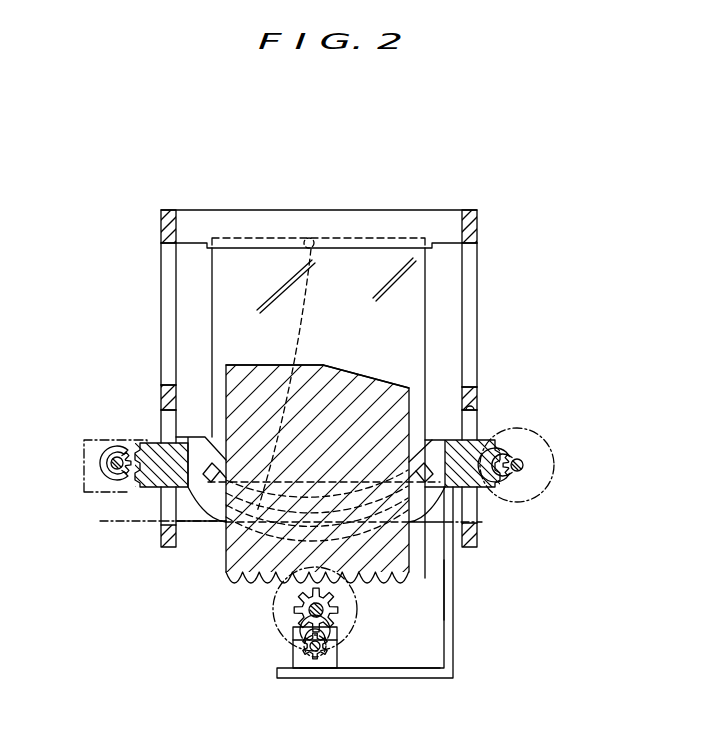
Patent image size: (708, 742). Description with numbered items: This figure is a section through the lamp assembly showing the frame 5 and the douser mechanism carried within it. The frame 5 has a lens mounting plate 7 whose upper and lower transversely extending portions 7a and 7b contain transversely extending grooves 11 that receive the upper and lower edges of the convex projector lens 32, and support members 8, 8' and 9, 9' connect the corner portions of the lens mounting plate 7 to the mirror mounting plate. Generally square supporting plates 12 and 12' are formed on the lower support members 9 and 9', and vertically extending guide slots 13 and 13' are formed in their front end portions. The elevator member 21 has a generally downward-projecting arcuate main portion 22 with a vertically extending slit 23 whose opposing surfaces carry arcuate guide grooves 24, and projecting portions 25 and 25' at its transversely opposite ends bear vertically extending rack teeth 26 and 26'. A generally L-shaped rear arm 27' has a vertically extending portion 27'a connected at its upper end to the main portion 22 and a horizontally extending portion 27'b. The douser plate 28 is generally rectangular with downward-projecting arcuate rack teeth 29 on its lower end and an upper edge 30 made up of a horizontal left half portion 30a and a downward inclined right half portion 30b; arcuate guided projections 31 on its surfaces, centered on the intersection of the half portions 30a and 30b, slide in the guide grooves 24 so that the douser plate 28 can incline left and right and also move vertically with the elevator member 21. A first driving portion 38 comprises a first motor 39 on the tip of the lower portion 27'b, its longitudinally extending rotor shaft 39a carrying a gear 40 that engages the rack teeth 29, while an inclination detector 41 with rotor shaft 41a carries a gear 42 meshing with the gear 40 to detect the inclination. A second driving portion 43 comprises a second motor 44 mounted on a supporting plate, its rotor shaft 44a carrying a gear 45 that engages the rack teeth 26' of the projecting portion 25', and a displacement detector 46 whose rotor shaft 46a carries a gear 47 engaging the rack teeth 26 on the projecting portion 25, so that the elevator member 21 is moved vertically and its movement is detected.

The frame 5 is at (480, 225).
The lens mounting plate 7 is at (478, 265).
The upper transversely extending portion 7a is at (372, 210).
The lower transversely extending portion 7b is at (190, 515).
The support member 8 is at (144, 215).
The support member 8' is at (476, 205).
The lower support member 9 is at (148, 545).
The lower support member 9' is at (502, 527).
The groove 11 is at (304, 238).
The supporting plate 12 is at (146, 361).
The supporting plate 12' is at (501, 364).
The guide slot 13 is at (146, 380).
The guide slot 13' is at (494, 385).
The elevator member 21 is at (213, 515).
The main portion 22 is at (200, 445).
The slit 23 is at (262, 366).
The arcuate guide groove 24 is at (423, 427).
The projecting portion 25 is at (157, 496).
The projecting portion 25' is at (468, 446).
The rack teeth 26 is at (112, 425).
The rack teeth 26' is at (547, 405).
The rear arm 27' is at (416, 582).
The vertically extending portion 27'a is at (504, 590).
The horizontally extending portion 27'b is at (379, 699).
The douser plate 28 is at (368, 378).
The rack teeth 29 is at (275, 588).
The upper edge 30 is at (215, 365).
The left half portion 30a is at (260, 363).
The right half portion 30b is at (357, 388).
The guided projection 31 is at (297, 380).
The projector lens 32 is at (415, 290).
The first driving portion 38 is at (268, 652).
The first motor 39 is at (350, 640).
The rotor shaft 39a is at (328, 618).
The gear 40 is at (277, 632).
The inclination detector 41 is at (342, 663).
The rotor shaft 41a is at (307, 660).
The gear 42 is at (317, 665).
The second driving portion 43 is at (602, 422).
The second motor 44 is at (543, 430).
The rotor shaft 44a is at (530, 457).
The gear 45 is at (540, 480).
The displacement detector 46 is at (92, 440).
The rotor shaft 46a is at (110, 478).
The gear 47 is at (100, 460).